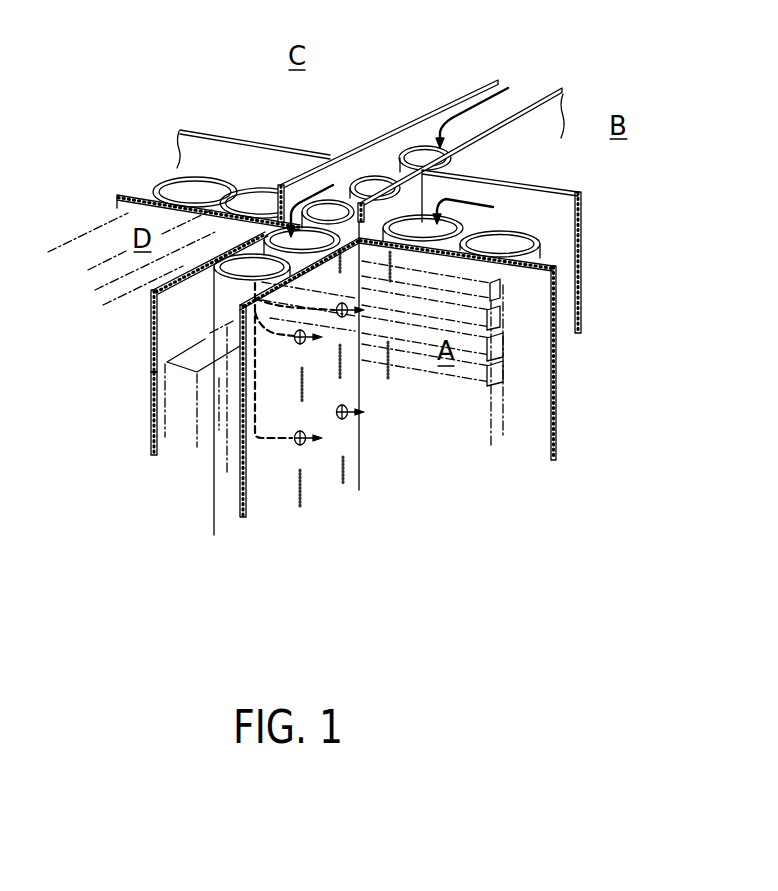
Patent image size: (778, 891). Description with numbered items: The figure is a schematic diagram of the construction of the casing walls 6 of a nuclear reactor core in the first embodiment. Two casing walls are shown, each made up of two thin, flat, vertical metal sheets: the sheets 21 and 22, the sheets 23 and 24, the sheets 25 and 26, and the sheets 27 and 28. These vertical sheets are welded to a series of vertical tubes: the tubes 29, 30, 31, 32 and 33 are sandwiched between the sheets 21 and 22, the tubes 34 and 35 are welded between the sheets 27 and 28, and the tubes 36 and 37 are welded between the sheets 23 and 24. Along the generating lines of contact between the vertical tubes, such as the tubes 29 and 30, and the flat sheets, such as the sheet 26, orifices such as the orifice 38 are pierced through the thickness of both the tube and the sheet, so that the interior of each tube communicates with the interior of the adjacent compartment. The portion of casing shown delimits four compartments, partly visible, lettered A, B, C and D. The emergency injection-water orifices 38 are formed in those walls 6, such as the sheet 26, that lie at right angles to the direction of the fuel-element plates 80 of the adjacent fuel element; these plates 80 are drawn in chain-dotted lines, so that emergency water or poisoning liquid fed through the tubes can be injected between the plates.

The walls 6 is at (519, 74).
The metal sheet 21 is at (493, 77).
The metal sheet 22 is at (563, 92).
The metal sheet 23 is at (582, 206).
The metal sheet 24 is at (553, 360).
The metal sheet 25 is at (156, 367).
The metal sheet 26 is at (242, 467).
The metal sheet 27 is at (178, 133).
The metal sheet 28 is at (110, 222).
The tube 29 is at (156, 304).
The tube 30 is at (259, 243).
The tube 31 is at (340, 203).
The tube 32 is at (372, 178).
The tube 33 is at (427, 148).
The tube 34 is at (196, 178).
The tube 35 is at (258, 192).
The tube 36 is at (440, 243).
The tube 37 is at (510, 258).
The orifice 38 is at (312, 446).
The plates 80 is at (505, 375).